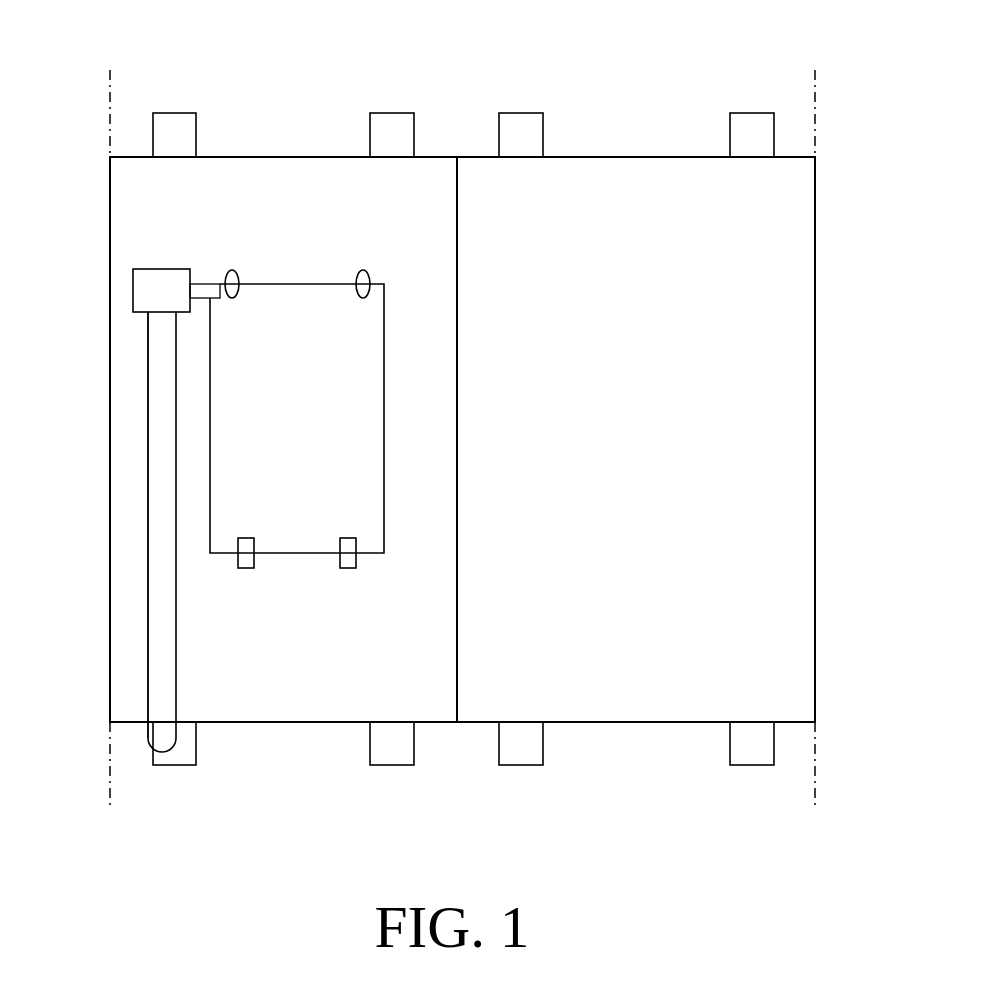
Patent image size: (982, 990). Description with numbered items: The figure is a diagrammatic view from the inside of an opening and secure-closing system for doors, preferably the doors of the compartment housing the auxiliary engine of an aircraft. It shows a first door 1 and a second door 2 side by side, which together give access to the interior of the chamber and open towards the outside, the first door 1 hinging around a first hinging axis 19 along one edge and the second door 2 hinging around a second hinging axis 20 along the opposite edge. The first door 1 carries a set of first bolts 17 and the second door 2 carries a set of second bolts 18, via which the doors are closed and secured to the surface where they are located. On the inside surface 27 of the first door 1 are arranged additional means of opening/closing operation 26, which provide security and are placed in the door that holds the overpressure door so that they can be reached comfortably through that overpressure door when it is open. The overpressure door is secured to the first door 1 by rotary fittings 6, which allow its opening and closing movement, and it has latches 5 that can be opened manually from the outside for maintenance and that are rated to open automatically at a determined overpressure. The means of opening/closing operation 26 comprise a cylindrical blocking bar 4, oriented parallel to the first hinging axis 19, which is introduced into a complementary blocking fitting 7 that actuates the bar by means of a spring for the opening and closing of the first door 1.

The first door 1 is at (428, 675).
The second door 2 is at (757, 441).
The cylindrical blocking bar 4 is at (162, 537).
The latches 5 is at (297, 591).
The rotary fittings 6 is at (297, 243).
The blocking fitting 7 is at (160, 292).
The first bolts 17 is at (283, 434).
The second bolts 18 is at (636, 435).
The first hinging axis 19 is at (110, 748).
The second hinging axis 20 is at (815, 748).
The means of opening/closing operation 26 is at (136, 341).
The inside surface 27 is at (132, 662).